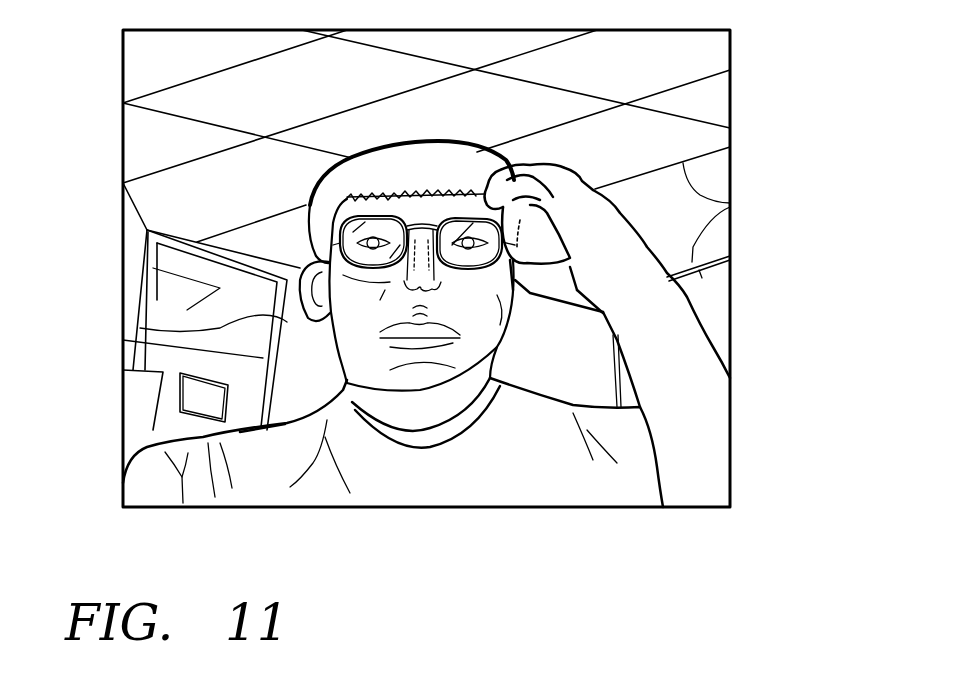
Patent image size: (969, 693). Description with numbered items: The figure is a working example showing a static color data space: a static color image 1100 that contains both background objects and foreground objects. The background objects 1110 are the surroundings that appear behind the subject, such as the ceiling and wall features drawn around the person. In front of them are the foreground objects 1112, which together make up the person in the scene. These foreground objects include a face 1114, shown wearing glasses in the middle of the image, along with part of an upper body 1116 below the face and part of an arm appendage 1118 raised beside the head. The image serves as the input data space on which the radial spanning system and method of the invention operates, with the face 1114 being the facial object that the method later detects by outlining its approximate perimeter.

The static color image 1100 is at (687, 507).
The background objects 1110 is at (203, 390).
The foreground objects 1112 is at (516, 429).
The face 1114 is at (370, 317).
The upper body 1116 is at (265, 459).
The arm appendage 1118 is at (664, 331).